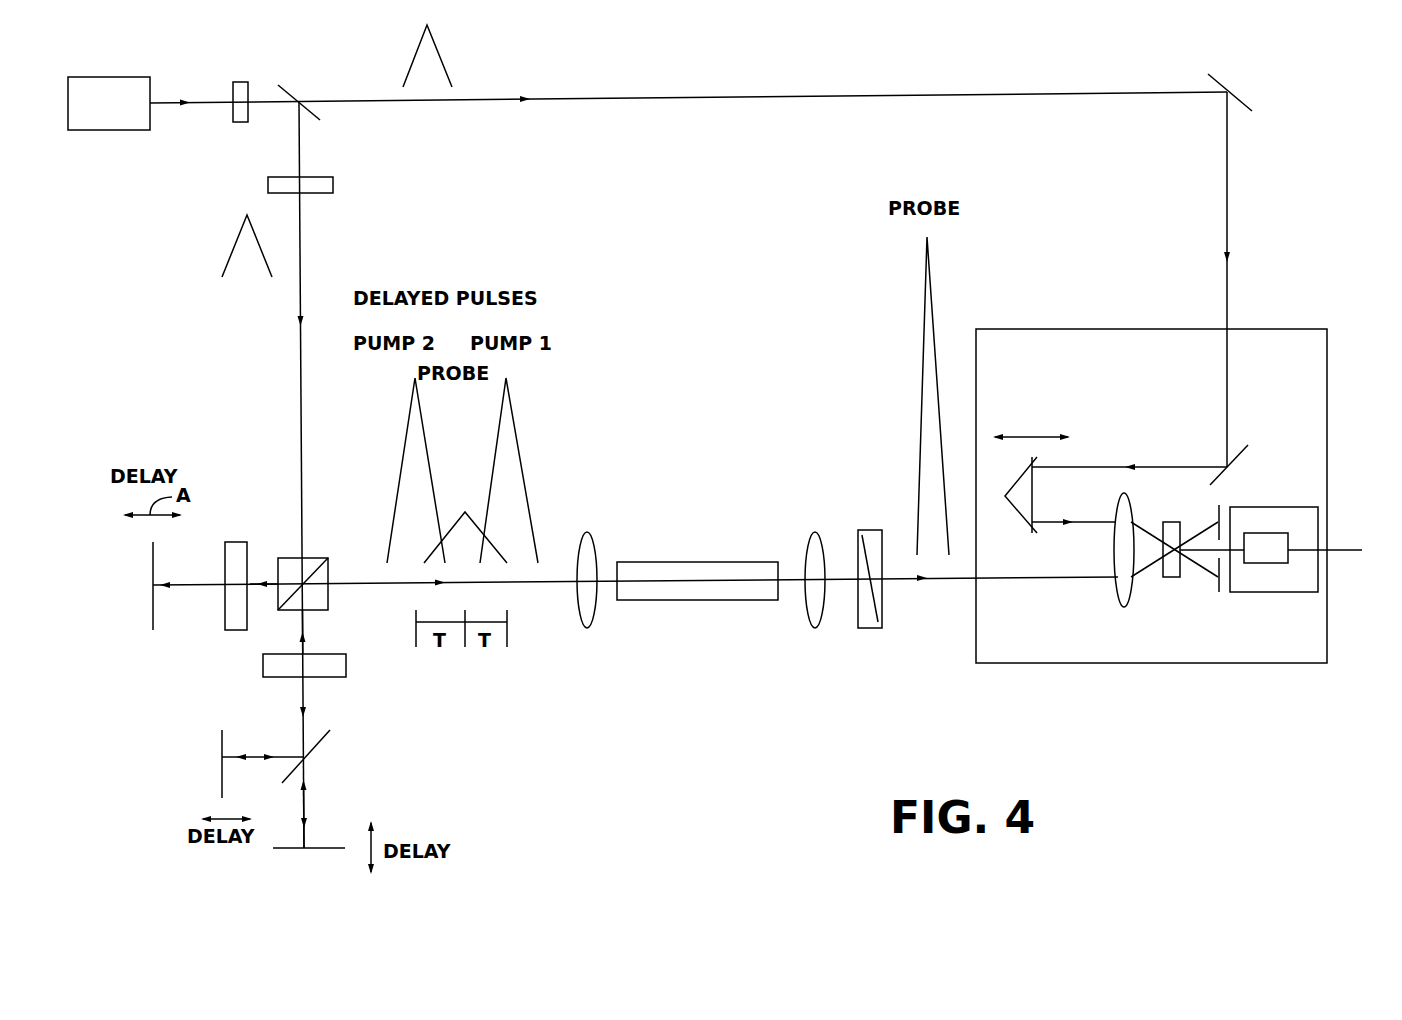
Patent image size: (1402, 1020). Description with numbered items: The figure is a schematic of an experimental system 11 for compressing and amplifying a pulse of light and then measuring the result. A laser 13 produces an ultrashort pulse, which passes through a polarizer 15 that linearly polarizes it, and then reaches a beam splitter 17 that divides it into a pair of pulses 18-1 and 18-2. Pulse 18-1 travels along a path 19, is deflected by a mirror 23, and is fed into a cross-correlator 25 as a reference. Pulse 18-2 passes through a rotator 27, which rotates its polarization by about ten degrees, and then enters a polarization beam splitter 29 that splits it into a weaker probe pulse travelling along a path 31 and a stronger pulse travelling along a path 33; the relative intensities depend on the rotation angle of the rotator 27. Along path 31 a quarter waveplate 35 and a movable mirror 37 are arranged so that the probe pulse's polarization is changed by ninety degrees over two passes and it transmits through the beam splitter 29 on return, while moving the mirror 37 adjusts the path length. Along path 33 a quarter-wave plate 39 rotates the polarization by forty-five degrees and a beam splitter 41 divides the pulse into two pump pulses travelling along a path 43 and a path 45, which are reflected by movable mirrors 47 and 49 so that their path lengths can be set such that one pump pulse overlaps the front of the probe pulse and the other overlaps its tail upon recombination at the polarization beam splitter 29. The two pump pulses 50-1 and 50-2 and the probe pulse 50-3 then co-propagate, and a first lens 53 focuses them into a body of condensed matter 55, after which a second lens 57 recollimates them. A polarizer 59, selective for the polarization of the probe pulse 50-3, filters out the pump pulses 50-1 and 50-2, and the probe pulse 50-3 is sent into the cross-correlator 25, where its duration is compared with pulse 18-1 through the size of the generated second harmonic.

The experimental system 11 is at (748, 735).
The laser 13 is at (112, 130).
The polarizer 15 is at (244, 122).
The beam splitter 17 is at (320, 114).
The pulse 18-1 is at (437, 46).
The pulse 18-2 is at (233, 255).
The path 19 is at (632, 96).
The mirror 23 is at (1241, 112).
The cross-correlator 25 is at (1000, 667).
The rotator 27 is at (268, 185).
The polarization beam splitter 29 is at (331, 575).
The path 31 is at (254, 580).
The path 33 is at (306, 620).
The quarter waveplate 35 is at (225, 622).
The mirror 37 is at (150, 604).
The quarter-wave plate 39 is at (263, 662).
The beam splitter 41 is at (318, 745).
The path 43 is at (291, 752).
The path 45 is at (308, 840).
The mirror 47 is at (220, 737).
The mirror 49 is at (285, 852).
The pump pulse 50-1 is at (403, 432).
The pump pulse 50-2 is at (518, 432).
The probe pulse 50-3 is at (450, 528).
The first lens 53 is at (590, 628).
The body of condensed matter 55 is at (678, 600).
The second lens 57 is at (810, 530).
The polarizer 59 is at (868, 528).